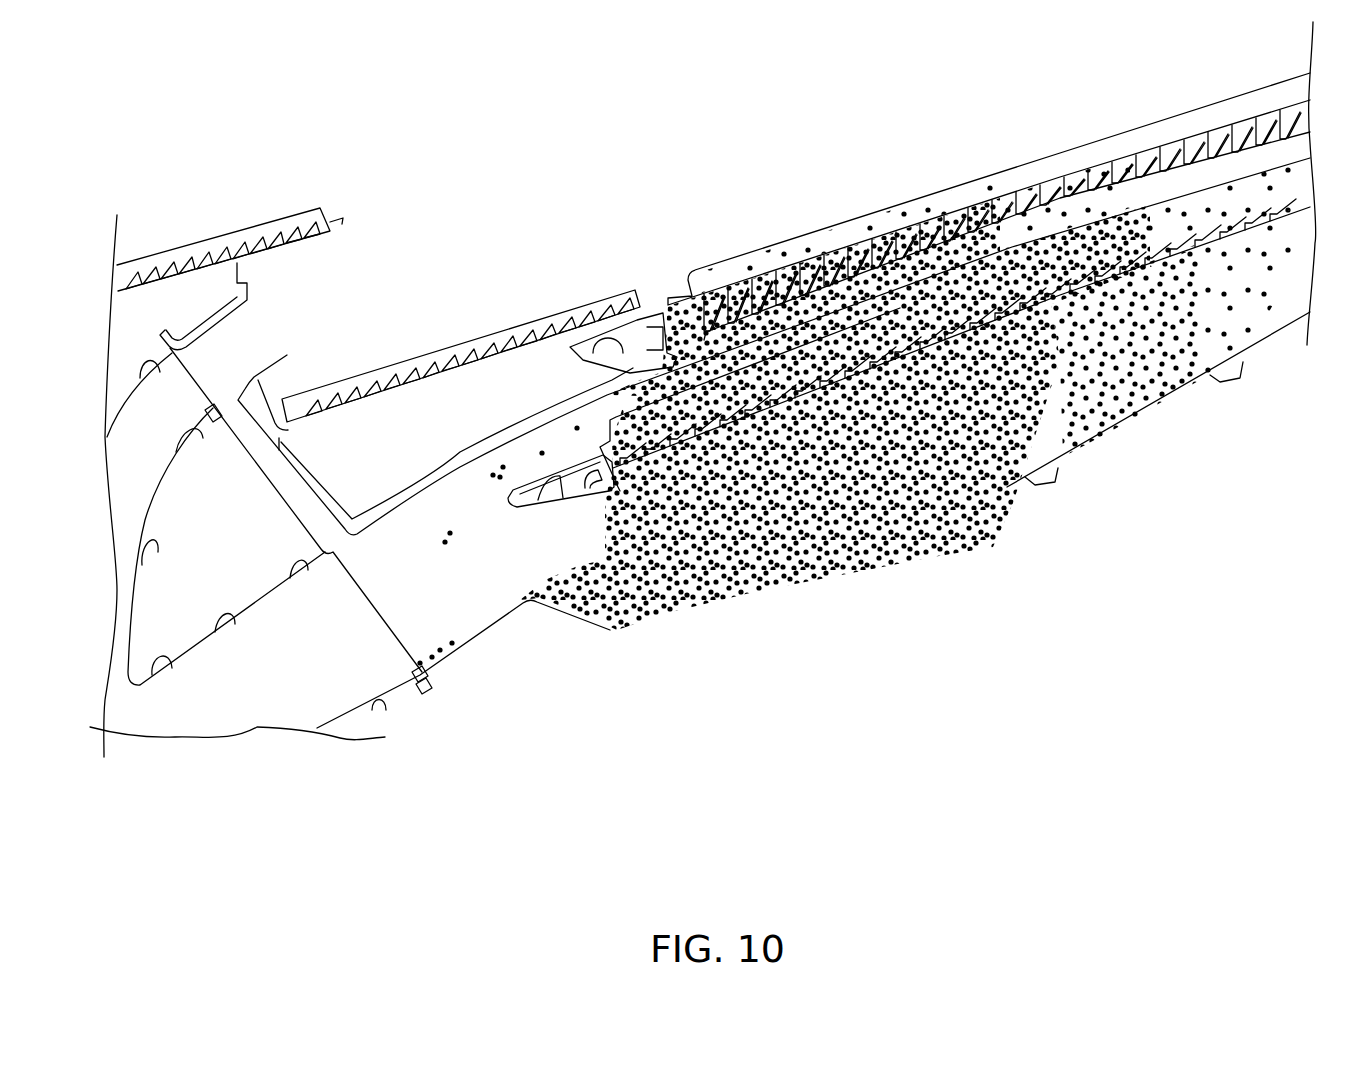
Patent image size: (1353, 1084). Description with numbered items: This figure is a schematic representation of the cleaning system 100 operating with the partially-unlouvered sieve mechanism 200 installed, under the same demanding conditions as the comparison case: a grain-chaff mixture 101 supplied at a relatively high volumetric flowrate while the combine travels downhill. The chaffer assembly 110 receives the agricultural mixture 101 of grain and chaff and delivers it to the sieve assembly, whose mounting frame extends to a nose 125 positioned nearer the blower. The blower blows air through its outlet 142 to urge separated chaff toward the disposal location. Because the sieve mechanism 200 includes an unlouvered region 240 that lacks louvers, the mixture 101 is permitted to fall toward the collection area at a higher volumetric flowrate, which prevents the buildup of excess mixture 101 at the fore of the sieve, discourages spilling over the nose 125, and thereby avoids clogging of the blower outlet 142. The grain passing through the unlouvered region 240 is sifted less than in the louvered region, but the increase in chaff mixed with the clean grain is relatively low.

The cleaning system 100 is at (525, 228).
The chaffer assembly 110 is at (797, 223).
The grain-chaff mixture 101 is at (662, 383).
The unlouvered region 240 is at (616, 428).
The partially-unlouvered sieve mechanism 200 is at (618, 498).
The nose 125 is at (500, 500).
The blower outlet 142 is at (410, 612).